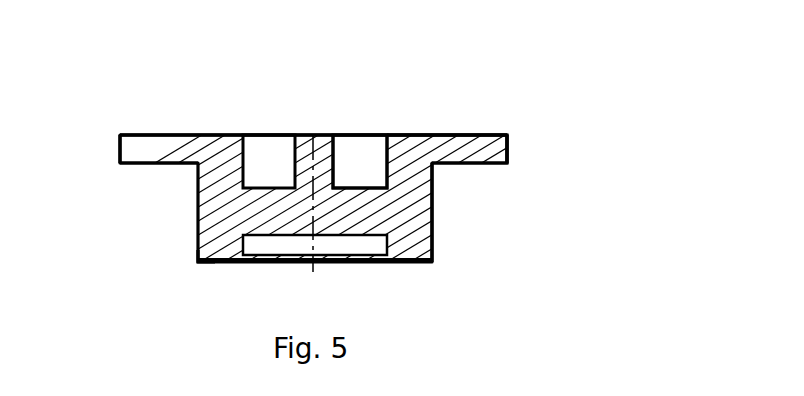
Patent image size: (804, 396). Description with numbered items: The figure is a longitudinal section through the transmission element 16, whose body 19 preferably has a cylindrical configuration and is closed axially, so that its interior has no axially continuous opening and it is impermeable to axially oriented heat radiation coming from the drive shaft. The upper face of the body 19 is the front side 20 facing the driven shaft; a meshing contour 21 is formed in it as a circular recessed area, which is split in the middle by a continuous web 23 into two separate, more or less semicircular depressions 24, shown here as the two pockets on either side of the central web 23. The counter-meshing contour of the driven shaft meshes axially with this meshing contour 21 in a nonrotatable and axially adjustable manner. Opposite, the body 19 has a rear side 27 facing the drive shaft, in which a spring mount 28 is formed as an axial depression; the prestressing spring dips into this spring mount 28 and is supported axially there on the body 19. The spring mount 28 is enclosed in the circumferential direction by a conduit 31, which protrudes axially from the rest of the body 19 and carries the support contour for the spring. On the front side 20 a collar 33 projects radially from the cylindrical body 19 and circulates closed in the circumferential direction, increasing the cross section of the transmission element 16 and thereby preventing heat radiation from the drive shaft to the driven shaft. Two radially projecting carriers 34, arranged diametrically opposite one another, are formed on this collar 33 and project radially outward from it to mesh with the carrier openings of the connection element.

The transmission element 16 is at (543, 108).
The body 19 is at (433, 215).
The front side 20 is at (198, 123).
The meshing contour 21 is at (360, 133).
The web 23 is at (310, 133).
The depressions 24 is at (260, 162).
The rear side 27 is at (215, 267).
The spring mount 28 is at (267, 263).
The conduit 31 is at (435, 247).
The collar 33 is at (450, 133).
The carriers 34 is at (495, 133).